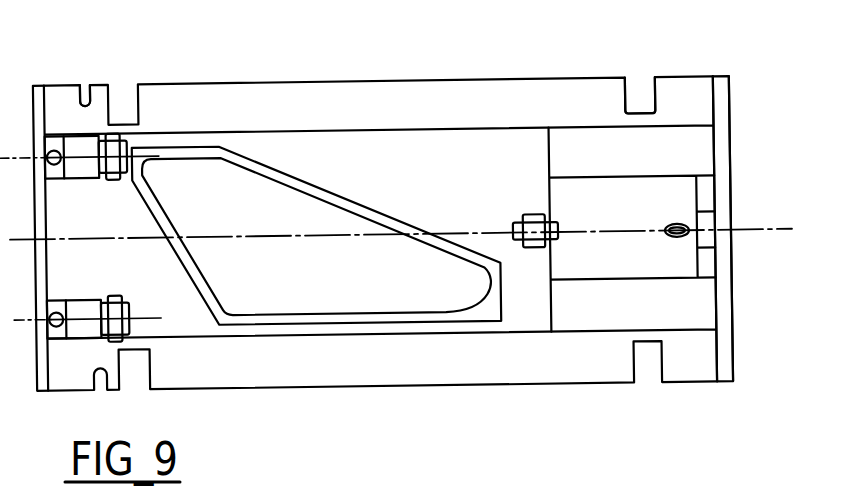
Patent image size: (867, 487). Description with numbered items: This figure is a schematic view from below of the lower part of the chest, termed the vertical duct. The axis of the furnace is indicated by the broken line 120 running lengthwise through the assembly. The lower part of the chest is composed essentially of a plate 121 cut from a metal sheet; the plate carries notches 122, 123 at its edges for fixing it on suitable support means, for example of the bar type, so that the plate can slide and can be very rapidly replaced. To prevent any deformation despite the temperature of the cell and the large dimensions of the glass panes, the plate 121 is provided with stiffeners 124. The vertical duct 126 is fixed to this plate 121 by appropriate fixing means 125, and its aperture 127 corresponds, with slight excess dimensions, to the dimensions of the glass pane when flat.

The axis of the furnace 120 is at (778, 233).
The plate 121 is at (520, 364).
The notch 122 is at (638, 90).
The notch 123 is at (86, 87).
The stiffener 124 is at (478, 130).
The fixing means 125 is at (115, 180).
The vertical duct 126 is at (317, 192).
The aperture 127 is at (316, 235).